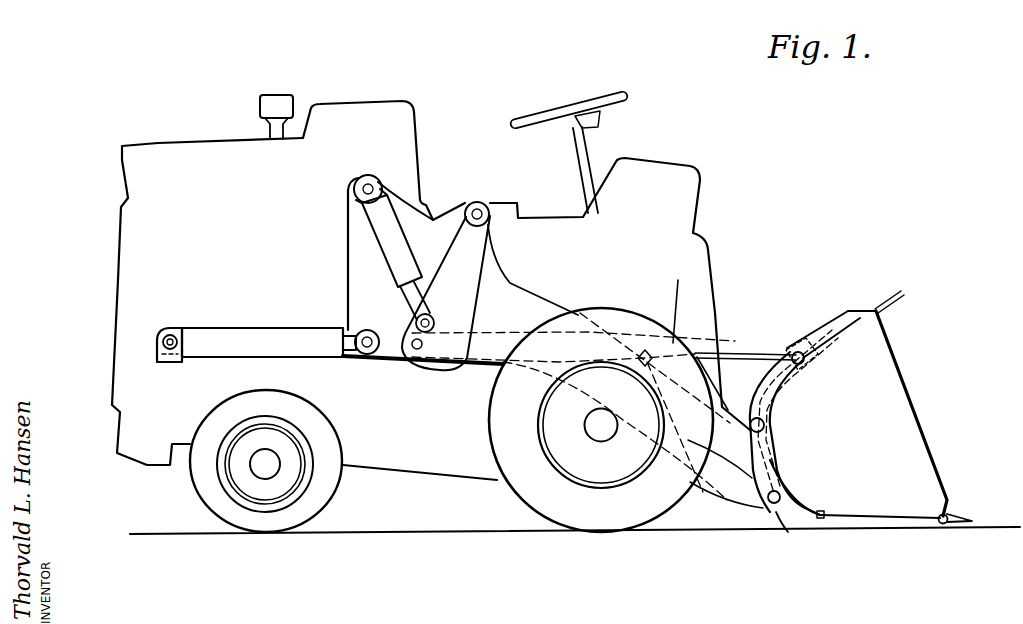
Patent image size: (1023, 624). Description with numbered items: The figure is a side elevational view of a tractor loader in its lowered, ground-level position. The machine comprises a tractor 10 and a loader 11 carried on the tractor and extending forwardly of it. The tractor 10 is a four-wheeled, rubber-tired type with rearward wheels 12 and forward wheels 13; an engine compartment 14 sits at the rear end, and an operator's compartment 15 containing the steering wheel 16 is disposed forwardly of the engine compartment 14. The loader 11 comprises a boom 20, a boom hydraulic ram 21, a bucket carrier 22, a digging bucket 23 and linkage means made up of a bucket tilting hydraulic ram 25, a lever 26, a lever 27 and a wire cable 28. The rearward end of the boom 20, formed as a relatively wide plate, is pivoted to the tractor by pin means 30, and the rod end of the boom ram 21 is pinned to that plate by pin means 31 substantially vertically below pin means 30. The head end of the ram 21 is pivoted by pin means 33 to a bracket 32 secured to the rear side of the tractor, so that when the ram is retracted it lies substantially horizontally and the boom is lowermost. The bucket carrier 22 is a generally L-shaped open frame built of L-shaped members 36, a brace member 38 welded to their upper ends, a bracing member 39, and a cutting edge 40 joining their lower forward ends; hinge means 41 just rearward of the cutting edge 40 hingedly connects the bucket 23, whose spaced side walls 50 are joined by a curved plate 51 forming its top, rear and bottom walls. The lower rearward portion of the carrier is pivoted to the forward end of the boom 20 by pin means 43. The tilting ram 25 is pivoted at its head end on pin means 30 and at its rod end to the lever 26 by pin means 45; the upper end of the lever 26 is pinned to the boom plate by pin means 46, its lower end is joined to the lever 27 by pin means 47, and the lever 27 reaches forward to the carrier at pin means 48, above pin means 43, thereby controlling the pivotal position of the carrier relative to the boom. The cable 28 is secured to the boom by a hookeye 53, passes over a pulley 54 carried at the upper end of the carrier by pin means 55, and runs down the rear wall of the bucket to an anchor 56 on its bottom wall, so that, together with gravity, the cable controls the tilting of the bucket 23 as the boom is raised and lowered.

The tractor 10 is at (349, 98).
The loader 11 is at (346, 227).
The rearward wheels 12 is at (232, 516).
The forward wheels 13 is at (557, 516).
The engine compartment 14 is at (124, 160).
The operator's compartment 15 is at (427, 156).
The steering wheel 16 is at (540, 112).
The boom 20 is at (347, 293).
The boom hydraulic ram 21 is at (203, 326).
The bucket carrier 22 is at (803, 337).
The digging bucket 23 is at (903, 373).
The bucket tilting reciprocating hydraulic ram 25 is at (403, 260).
The lever 26 is at (472, 303).
The lever 27 is at (483, 355).
The wire cable 28 is at (723, 352).
The pin means 30 is at (368, 175).
The pin means 31 is at (362, 355).
The bracket 32 is at (160, 356).
The pin means 33 is at (160, 340).
The L-shaped members 36 is at (778, 530).
The brace member 38 is at (797, 341).
The member 39 is at (773, 452).
The cutting edge 40 is at (960, 518).
The hinge means 41 is at (943, 525).
The pin means 43 is at (771, 503).
The pin means 45 is at (417, 319).
The pin means 46 is at (481, 208).
The pin means 47 is at (414, 350).
The pin means 48 is at (765, 427).
The side walls 50 is at (921, 450).
The curved plate 51 is at (902, 291).
The hookeye 53 is at (645, 349).
The pulley 54 is at (791, 388).
The pin means 55 is at (804, 362).
The anchor 56 is at (822, 520).